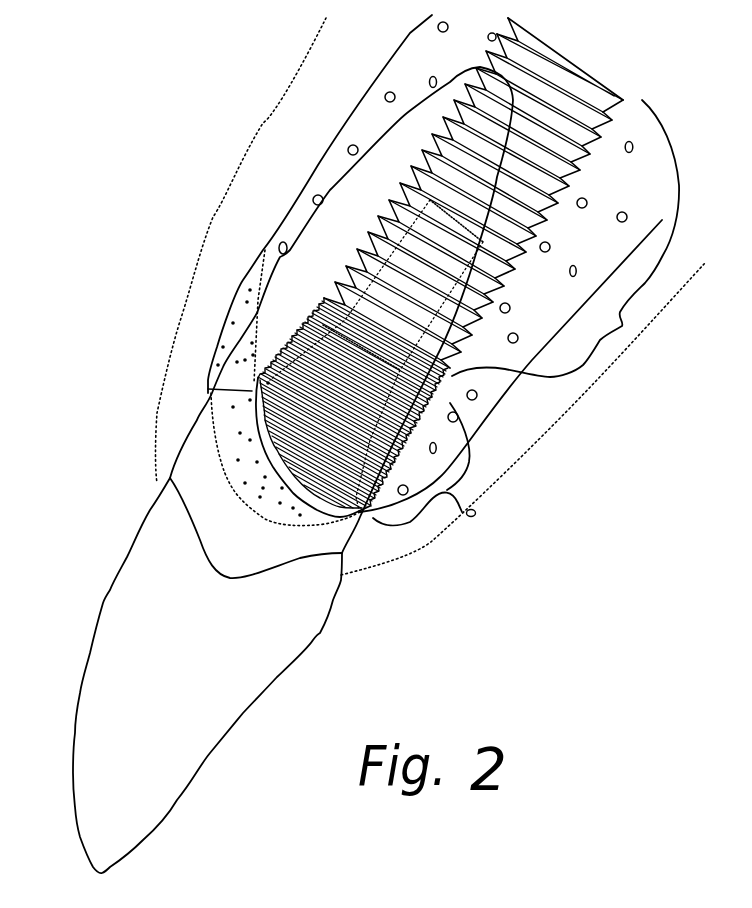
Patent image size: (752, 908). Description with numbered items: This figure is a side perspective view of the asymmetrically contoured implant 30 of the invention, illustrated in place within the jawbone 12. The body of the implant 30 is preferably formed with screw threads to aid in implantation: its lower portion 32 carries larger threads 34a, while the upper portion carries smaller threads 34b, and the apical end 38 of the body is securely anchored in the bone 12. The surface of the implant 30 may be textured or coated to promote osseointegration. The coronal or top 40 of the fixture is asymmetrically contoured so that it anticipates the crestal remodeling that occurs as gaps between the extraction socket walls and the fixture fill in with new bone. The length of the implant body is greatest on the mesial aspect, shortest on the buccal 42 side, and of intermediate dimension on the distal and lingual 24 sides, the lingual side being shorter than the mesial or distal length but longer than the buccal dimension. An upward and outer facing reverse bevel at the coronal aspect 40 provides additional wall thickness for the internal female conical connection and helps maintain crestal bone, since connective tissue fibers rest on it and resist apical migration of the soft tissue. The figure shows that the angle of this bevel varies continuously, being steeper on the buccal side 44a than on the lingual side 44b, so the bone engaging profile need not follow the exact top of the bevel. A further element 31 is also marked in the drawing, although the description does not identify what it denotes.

The jawbone 12 is at (553, 290).
The lingual side 24 is at (500, 398).
The asymmetrically contoured implant 30 is at (393, 267).
The gingival margin 31 is at (424, 464).
The lower portion 32 is at (638, 340).
The larger threads 34a is at (420, 144).
The smaller threads 34b is at (352, 407).
The apical end 38 is at (577, 61).
The coronal or top 40 is at (278, 482).
The buccal side 42 is at (352, 116).
The buccal side bevel 44a is at (253, 386).
The lingual side bevel 44b is at (360, 517).